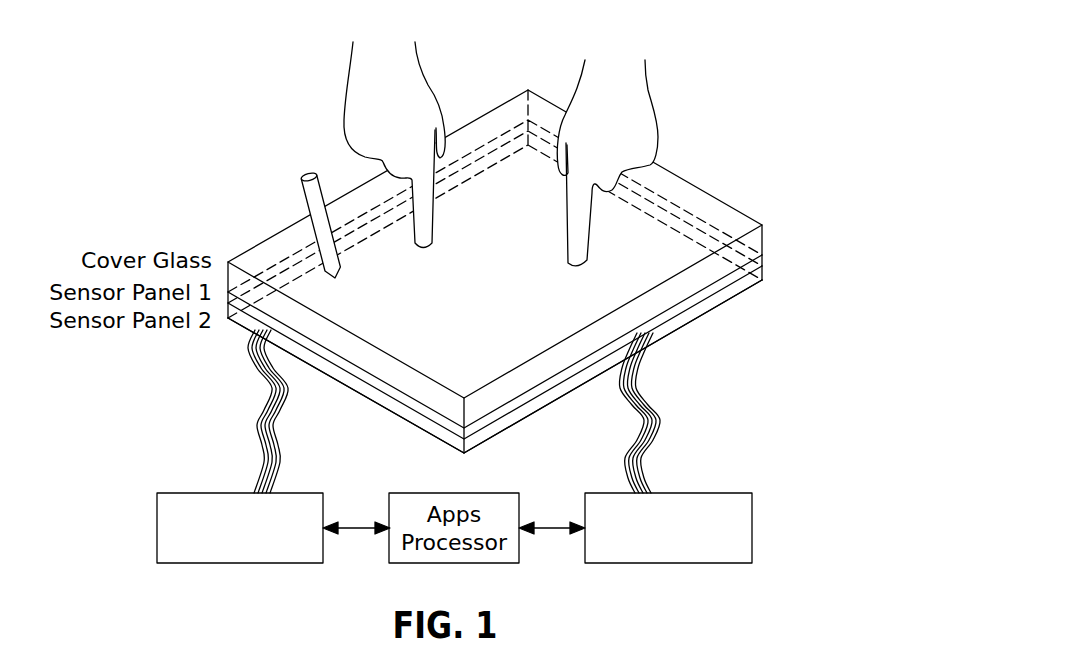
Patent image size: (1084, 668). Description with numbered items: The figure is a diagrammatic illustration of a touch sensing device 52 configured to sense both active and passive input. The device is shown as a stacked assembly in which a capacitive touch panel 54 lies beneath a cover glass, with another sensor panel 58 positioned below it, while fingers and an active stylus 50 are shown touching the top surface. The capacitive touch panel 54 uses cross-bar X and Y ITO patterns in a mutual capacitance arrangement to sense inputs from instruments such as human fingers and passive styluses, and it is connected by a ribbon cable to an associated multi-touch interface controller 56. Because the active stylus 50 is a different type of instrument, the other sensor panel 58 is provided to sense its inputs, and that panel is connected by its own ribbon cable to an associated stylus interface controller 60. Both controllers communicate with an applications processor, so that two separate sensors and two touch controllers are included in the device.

The active stylus 50 is at (300, 169).
The touch sensing device 52 is at (717, 158).
The capacitive touch panel 54 is at (712, 313).
The multi-touch interface controller 56 is at (197, 493).
The sensor panel 58 is at (518, 410).
The stylus interface controller 60 is at (712, 493).